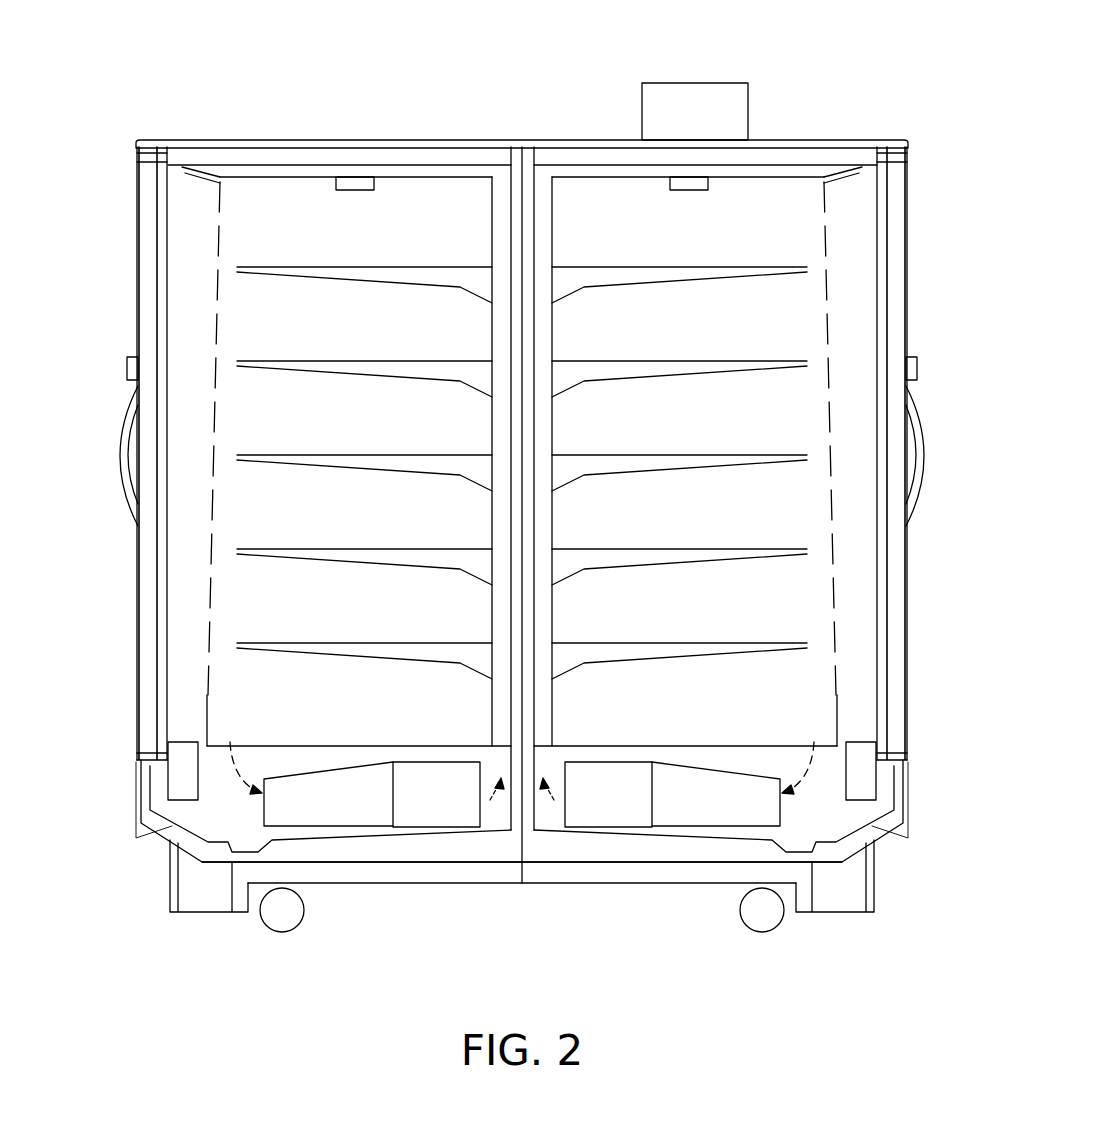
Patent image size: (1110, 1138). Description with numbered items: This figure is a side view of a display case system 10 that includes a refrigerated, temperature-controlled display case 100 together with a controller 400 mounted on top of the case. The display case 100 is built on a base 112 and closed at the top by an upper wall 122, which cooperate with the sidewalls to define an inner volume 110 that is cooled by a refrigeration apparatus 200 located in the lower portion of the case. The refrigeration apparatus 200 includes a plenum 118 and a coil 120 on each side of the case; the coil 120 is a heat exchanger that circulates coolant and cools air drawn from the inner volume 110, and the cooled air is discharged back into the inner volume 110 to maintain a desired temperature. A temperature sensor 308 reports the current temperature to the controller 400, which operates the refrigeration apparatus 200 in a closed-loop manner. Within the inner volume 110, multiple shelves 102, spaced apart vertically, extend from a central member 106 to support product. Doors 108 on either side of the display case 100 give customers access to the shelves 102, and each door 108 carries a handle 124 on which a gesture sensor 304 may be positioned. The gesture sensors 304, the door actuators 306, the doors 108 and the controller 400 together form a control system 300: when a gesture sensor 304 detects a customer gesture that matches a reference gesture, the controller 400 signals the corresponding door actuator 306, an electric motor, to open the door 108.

The display case system 10 is at (912, 70).
The display case 100 is at (98, 146).
The shelves 102 is at (431, 267).
The central member 106 is at (168, 313).
The doors 108 is at (141, 302).
The inner volume 110 is at (460, 190).
The base 112 is at (436, 876).
The plenum 118 is at (266, 822).
The coil 120 is at (447, 762).
The upper wall 122 is at (386, 139).
The handle 124 is at (121, 458).
The refrigeration apparatus 200 is at (278, 742).
The control system 300 is at (527, 70).
The gesture sensor 304 is at (130, 360).
The door actuator 306 is at (176, 742).
The temperature sensor 308 is at (354, 190).
The controller 400 is at (703, 83).